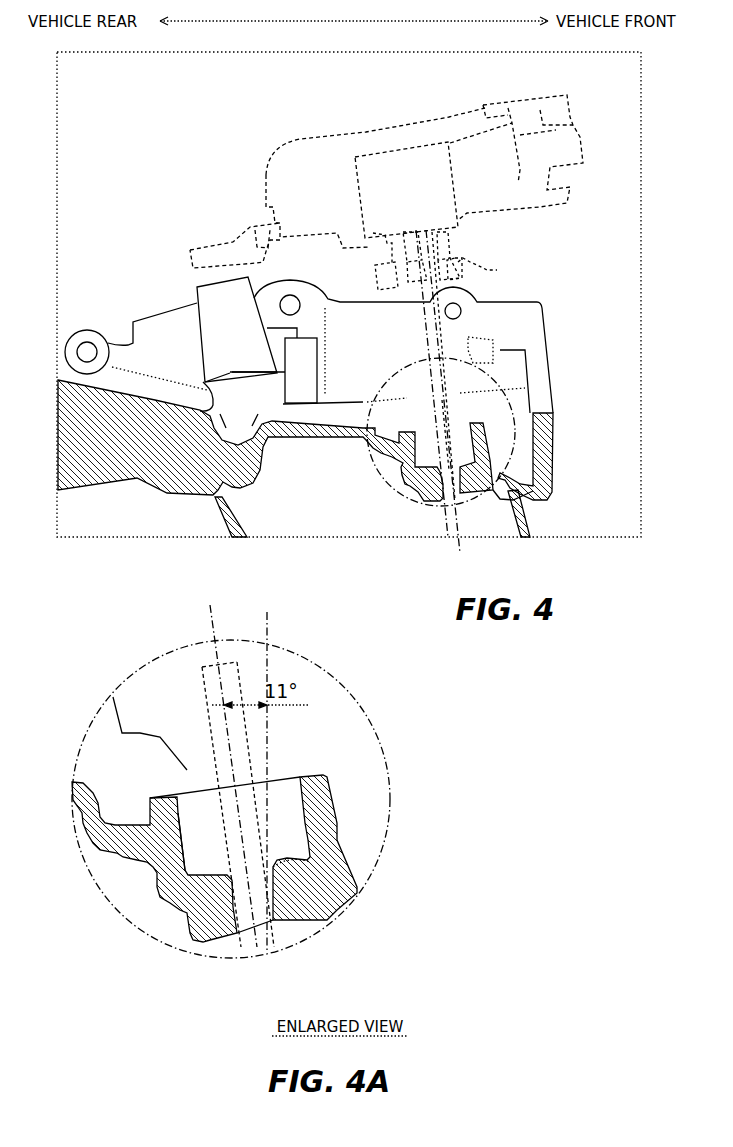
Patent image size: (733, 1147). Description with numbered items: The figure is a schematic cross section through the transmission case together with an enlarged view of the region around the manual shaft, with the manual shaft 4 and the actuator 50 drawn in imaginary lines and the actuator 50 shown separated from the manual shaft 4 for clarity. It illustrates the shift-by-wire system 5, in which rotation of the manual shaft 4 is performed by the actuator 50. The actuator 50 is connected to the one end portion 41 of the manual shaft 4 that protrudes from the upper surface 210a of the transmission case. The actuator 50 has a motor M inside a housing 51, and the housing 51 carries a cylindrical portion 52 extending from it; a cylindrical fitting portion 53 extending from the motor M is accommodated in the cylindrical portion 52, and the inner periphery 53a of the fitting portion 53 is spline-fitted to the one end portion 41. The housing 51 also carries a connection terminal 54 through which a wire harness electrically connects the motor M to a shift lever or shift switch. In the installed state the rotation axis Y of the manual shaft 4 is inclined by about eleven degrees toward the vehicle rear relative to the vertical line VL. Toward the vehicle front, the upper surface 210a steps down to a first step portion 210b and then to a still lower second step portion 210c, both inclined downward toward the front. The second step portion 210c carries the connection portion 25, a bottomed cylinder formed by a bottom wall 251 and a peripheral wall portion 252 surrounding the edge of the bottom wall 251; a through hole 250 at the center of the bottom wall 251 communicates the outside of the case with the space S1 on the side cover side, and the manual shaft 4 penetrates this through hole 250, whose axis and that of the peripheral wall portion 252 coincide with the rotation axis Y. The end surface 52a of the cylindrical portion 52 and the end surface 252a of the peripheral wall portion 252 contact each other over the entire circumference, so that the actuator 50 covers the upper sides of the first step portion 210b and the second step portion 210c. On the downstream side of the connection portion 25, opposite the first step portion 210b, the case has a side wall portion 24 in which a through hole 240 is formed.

In FIG. 4, the shift-by-wire system 5 is at (366, 177).
In FIG. 4, the actuator 50 is at (336, 134).
In FIG. 4, the housing 51 is at (458, 125).
In FIG. 4, the connection terminal 54 is at (534, 104).
In FIG. 4, the fitting portion 53 is at (375, 280).
In FIG. 4, the inner periphery 53a is at (453, 260).
In FIG. 4, the cylindrical portion 52 is at (482, 270).
In FIG. 4, the end surface 52a is at (392, 346).
In FIG. 4, the one end portion 41 is at (471, 297).
In FIG. 4A, the one end portion 41 is at (202, 673).
In FIG. 4, the connection portion 25 is at (423, 426).
In FIG. 4A, the connection portion 25 is at (299, 793).
In FIG. 4, the side wall portion 24 is at (553, 447).
In FIG. 4, the through hole 240 is at (552, 468).
In FIG. 4, the upper surface 210a is at (150, 397).
In FIG. 4, the first step portion 210b is at (330, 411).
In FIG. 4, the second step portion 210c is at (507, 475).
In FIG. 4A, the second step portion 210c is at (130, 823).
In FIG. 4A, the through hole 250 is at (327, 897).
In FIG. 4A, the bottom wall 251 is at (337, 827).
In FIG. 4A, the peripheral wall portion 252 is at (333, 793).
In FIG. 4A, the end surface 252a is at (310, 770).
In FIG. 4A, the manual shaft 4 is at (234, 941).
In FIG. 4, the motor M is at (380, 150).
In FIG. 4, the rotation axis Y is at (420, 255).
In FIG. 4A, the rotation axis Y is at (238, 764).
In FIG. 4A, the vertical line VL is at (268, 769).
In FIG. 4, the space on the side cover side S1 is at (270, 518).
In FIG. 4A, the space on the side cover side S1 is at (140, 896).